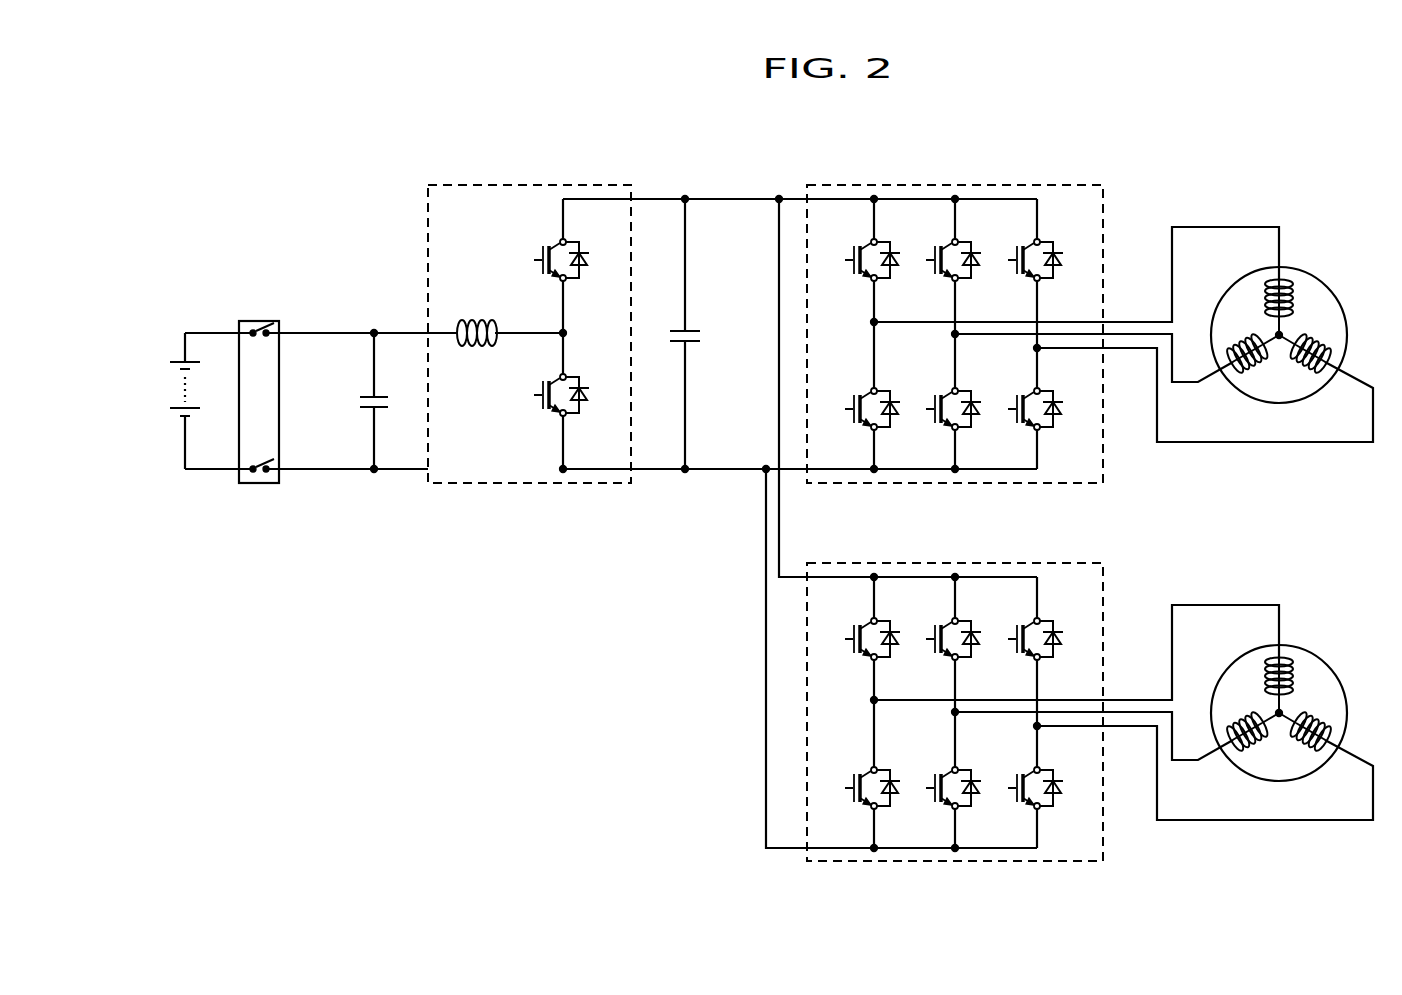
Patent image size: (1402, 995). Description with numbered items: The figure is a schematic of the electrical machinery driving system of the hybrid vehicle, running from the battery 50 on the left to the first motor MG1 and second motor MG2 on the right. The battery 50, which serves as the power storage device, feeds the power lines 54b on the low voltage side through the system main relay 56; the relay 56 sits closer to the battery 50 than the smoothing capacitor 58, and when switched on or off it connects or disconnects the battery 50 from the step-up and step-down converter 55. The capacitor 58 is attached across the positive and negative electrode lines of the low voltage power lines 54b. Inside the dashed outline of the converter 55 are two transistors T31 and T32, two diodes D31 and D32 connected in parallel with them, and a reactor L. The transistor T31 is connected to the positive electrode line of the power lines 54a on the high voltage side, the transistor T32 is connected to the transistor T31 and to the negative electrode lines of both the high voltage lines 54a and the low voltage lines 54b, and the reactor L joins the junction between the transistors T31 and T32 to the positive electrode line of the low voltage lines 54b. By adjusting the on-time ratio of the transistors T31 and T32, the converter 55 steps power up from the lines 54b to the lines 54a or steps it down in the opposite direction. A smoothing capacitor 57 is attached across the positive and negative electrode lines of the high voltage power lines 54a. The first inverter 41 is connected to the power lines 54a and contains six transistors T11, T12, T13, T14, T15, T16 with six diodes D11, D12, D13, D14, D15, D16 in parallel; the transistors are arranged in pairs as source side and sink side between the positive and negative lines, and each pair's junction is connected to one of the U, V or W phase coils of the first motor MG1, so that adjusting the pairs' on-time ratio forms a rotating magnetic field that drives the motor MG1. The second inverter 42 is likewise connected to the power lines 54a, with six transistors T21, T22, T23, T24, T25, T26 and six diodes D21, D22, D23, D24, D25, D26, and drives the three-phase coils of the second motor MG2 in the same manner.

The battery 50 is at (179, 352).
The system main relay 56 is at (258, 320).
The power lines on low voltage side 54b is at (333, 337).
The smoothing capacitor 58 is at (383, 396).
The step-up and step-down converter 55 is at (522, 183).
The reactor L is at (470, 318).
The transistor T31 is at (537, 258).
The diode D31 is at (584, 267).
The transistor T32 is at (537, 393).
The diode D32 is at (584, 402).
The smoothing capacitor 57 is at (692, 326).
The power lines on high voltage side 54a is at (753, 200).
The first inverter 41 is at (955, 183).
The second inverter 42 is at (955, 562).
The transistor T11 is at (848, 258).
The transistor T12 is at (929, 258).
The transistor T13 is at (1011, 258).
The transistor T14 is at (848, 407).
The transistor T15 is at (929, 407).
The transistor T16 is at (1011, 407).
The diode D11 is at (895, 267).
The diode D12 is at (976, 267).
The diode D13 is at (1058, 267).
The diode D14 is at (895, 416).
The diode D15 is at (976, 416).
The diode D16 is at (1058, 416).
The transistor T21 is at (848, 637).
The transistor T22 is at (929, 637).
The transistor T23 is at (1011, 637).
The transistor T24 is at (848, 786).
The transistor T25 is at (929, 786).
The transistor T26 is at (1011, 786).
The diode D21 is at (895, 646).
The diode D22 is at (976, 646).
The diode D23 is at (1058, 646).
The diode D24 is at (895, 795).
The diode D25 is at (976, 795).
The diode D26 is at (1058, 795).
The first motor MG1 is at (1310, 272).
The second motor MG2 is at (1310, 650).